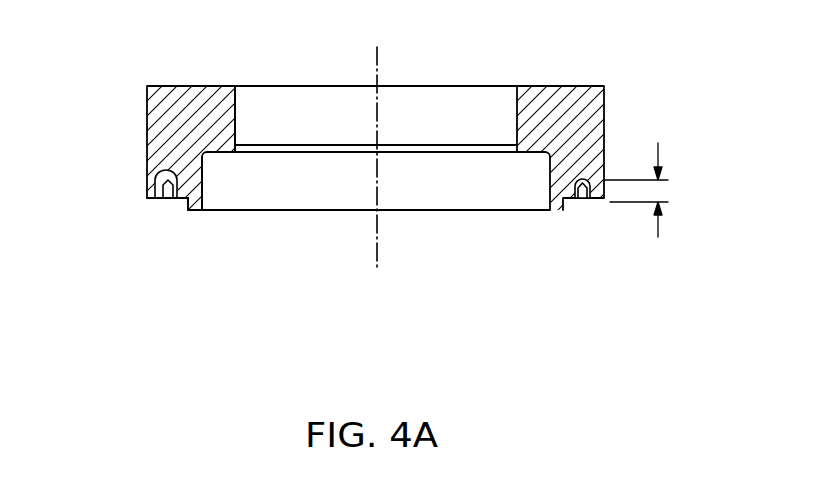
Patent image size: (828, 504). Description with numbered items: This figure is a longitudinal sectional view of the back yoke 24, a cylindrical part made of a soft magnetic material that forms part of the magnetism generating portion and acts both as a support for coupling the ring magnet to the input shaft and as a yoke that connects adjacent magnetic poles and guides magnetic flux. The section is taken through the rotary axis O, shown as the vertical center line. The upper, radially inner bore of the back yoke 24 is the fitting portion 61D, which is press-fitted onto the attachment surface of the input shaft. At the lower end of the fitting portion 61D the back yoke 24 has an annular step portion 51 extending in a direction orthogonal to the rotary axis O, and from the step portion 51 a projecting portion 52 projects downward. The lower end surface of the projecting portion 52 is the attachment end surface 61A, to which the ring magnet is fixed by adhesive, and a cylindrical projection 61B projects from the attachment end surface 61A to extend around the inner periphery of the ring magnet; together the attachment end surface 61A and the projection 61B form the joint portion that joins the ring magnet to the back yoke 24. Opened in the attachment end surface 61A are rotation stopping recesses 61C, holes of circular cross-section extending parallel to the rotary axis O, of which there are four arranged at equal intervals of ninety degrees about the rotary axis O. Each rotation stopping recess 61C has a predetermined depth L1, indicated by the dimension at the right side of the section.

The back yoke 24 is at (157, 114).
The step portion 51 is at (222, 153).
The projecting portion 52 is at (202, 177).
The attachment end surface 61A is at (155, 198).
The projection 61B is at (187, 206).
The rotation stopping recess 61C is at (156, 174).
The fitting portion 61D is at (237, 113).
The rotary axis O is at (377, 70).
The predetermined depth L1 is at (651, 190).